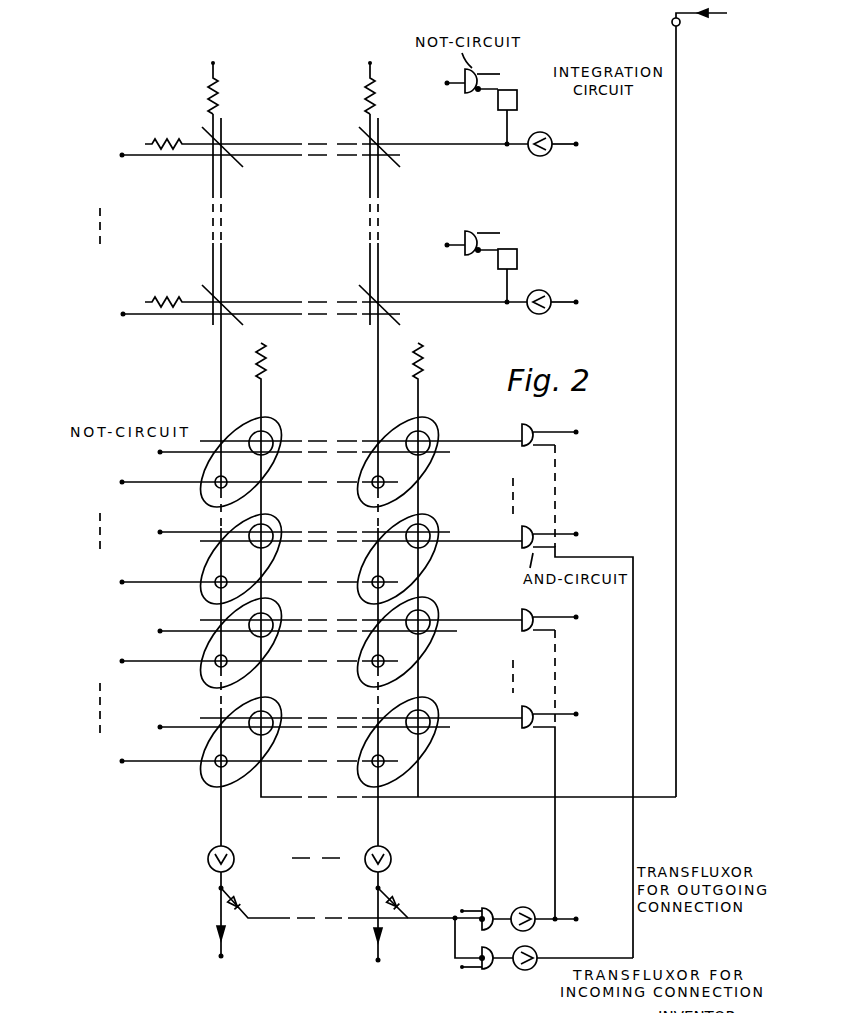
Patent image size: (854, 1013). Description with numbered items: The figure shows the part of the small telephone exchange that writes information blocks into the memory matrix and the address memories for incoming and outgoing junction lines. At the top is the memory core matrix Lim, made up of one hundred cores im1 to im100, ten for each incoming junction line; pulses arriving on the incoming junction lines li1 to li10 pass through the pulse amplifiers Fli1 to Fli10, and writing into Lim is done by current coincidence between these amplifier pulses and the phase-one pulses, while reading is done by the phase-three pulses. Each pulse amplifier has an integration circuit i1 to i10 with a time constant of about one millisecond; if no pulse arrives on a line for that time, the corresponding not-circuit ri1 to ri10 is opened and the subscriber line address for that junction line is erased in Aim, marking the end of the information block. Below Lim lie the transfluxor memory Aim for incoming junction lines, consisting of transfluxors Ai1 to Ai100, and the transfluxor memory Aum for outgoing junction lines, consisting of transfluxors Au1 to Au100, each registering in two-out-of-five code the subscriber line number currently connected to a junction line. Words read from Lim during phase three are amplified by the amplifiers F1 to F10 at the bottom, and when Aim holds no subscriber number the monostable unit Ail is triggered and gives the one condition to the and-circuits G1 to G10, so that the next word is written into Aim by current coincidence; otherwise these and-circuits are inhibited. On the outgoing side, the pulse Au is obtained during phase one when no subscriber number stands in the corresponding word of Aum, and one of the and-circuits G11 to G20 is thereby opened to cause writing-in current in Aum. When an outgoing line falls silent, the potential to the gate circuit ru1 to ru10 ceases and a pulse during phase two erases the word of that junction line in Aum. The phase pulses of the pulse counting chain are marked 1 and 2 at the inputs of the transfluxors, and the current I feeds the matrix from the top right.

The current source input I is at (672, 22).
The memory core matrix for incoming junction lines Lim is at (301, 480).
The memory core im1 is at (220, 146).
The memory core im100 is at (380, 302).
The integration circuit i1 is at (517, 100).
The integration circuit i10 is at (517, 260).
The pulse amplifier Fli1 is at (535, 158).
The pulse amplifier Fli10 is at (537, 317).
The incoming junction line li1 is at (578, 146).
The incoming junction line li10 is at (582, 304).
The transfluxor memory for incoming junction lines Aim is at (431, 570).
The transfluxor memory for outgoing junction lines Aum is at (354, 691).
The transfluxor Ai1 is at (233, 435).
The transfluxor Ai100 is at (423, 563).
The transfluxor Au1 is at (237, 617).
The transfluxor Au100 is at (420, 745).
The and-circuit G10 is at (534, 485).
The and-circuit G1 is at (565, 742).
The and-circuit G20 is at (536, 668).
The and-circuit G11 is at (536, 812).
The amplifier F1 is at (345, 902).
The amplifier F10 is at (398, 904).
The pulse Au is at (528, 933).
The monostable unit Ail is at (570, 975).
The not-circuit ri1 is at (467, 87).
The not-circuit ri10 is at (290, 397).
The gate circuit ru1 is at (289, 630).
The gate circuit ru10 is at (285, 728).
The phase 1 pulse 1 is at (471, 901).
The phase 2 pulse 2 is at (469, 978).